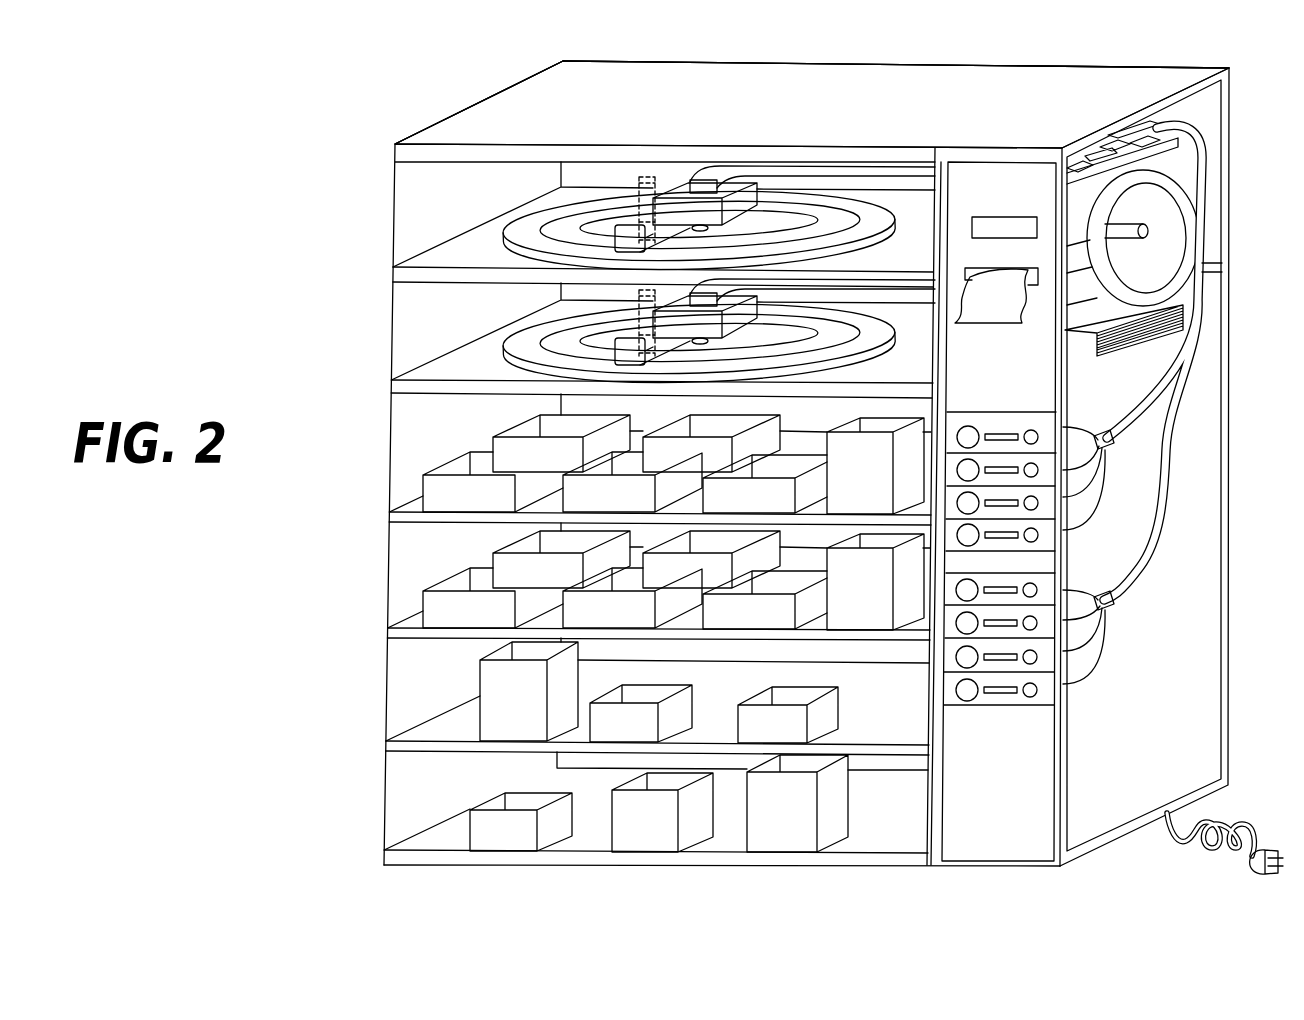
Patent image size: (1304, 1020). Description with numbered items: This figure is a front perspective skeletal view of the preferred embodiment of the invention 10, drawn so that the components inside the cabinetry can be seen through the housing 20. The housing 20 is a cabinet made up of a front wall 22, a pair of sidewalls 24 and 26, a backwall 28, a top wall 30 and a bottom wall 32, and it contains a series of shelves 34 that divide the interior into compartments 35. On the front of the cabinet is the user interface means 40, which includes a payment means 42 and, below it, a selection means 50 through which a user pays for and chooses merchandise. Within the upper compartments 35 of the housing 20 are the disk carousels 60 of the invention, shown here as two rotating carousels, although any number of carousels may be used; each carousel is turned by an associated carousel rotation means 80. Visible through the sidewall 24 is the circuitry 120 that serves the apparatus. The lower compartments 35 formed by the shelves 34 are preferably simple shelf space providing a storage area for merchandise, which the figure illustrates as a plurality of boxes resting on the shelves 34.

The invention 10 is at (339, 129).
The housing 20 is at (390, 273).
The front wall 22 is at (1006, 847).
The sidewall 24 is at (1229, 660).
The sidewall 26 is at (460, 112).
The backwall 28 is at (712, 62).
The top wall 30 is at (682, 112).
The bottom wall 32 is at (384, 865).
The shelves 34 is at (422, 265).
The compartments 35 is at (452, 210).
The user interface means 40 is at (1039, 364).
The payment means 42 is at (1007, 264).
The selection means 50 is at (1001, 429).
The disk carousels 60 is at (503, 246).
The carousel rotation means 80 is at (757, 183).
The circuitry 120 is at (1201, 124).